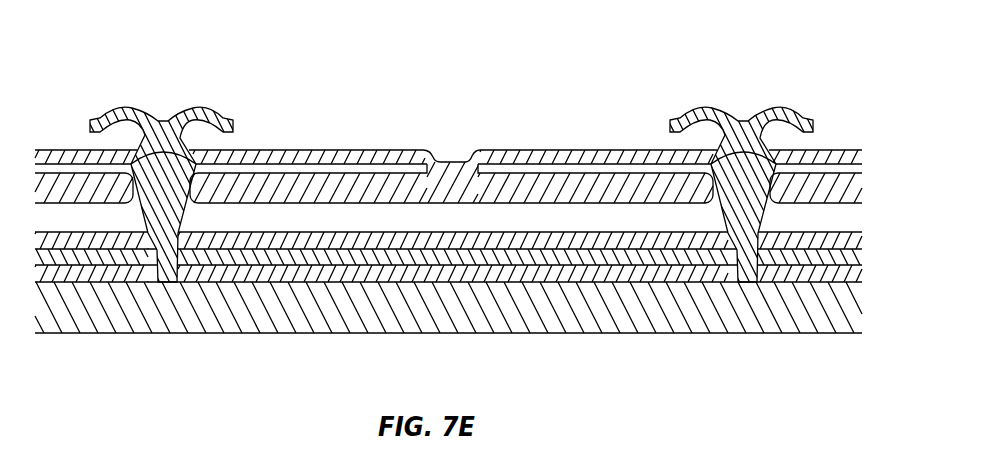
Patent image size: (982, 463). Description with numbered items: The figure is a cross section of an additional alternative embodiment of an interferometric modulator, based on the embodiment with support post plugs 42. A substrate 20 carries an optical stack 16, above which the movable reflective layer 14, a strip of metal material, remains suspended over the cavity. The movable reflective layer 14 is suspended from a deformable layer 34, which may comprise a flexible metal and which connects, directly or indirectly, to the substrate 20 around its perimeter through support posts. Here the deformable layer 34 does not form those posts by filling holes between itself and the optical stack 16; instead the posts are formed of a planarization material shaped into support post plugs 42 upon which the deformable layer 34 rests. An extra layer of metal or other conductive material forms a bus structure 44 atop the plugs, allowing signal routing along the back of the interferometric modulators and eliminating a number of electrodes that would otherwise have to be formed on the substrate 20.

The movable reflective layer 14 is at (387, 187).
The optical stack 16 is at (871, 231).
The substrate 20 is at (577, 308).
The deformable layer 34 is at (497, 150).
The support post plugs 42 is at (444, 179).
The bus structure 44 is at (132, 108).